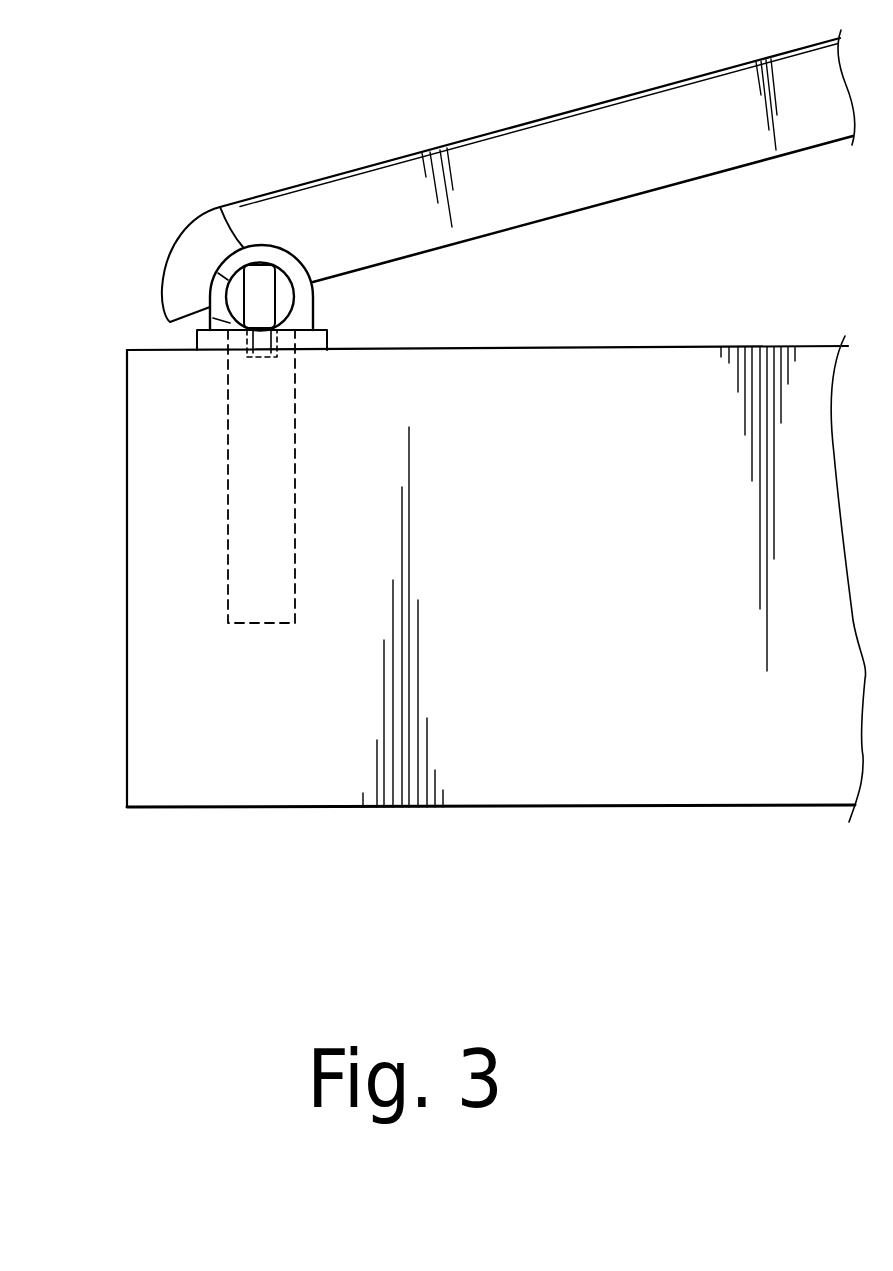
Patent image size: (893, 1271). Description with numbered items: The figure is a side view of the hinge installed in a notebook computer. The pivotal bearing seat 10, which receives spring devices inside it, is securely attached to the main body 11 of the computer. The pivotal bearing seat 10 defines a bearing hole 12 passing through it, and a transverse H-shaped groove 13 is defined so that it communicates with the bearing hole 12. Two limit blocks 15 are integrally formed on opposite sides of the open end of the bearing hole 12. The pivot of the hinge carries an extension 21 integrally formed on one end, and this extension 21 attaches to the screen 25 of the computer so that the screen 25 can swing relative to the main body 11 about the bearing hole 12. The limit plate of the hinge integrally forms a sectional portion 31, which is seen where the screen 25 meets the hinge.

The pivotal bearing seat 10 is at (287, 547).
The main body 11 is at (138, 438).
The bearing hole 12 is at (285, 262).
The transverse H-shaped groove 13 is at (297, 357).
The limit blocks 15 is at (227, 318).
The extension 21 is at (283, 300).
The screen 25 is at (443, 162).
The sectional portion 31 is at (218, 207).